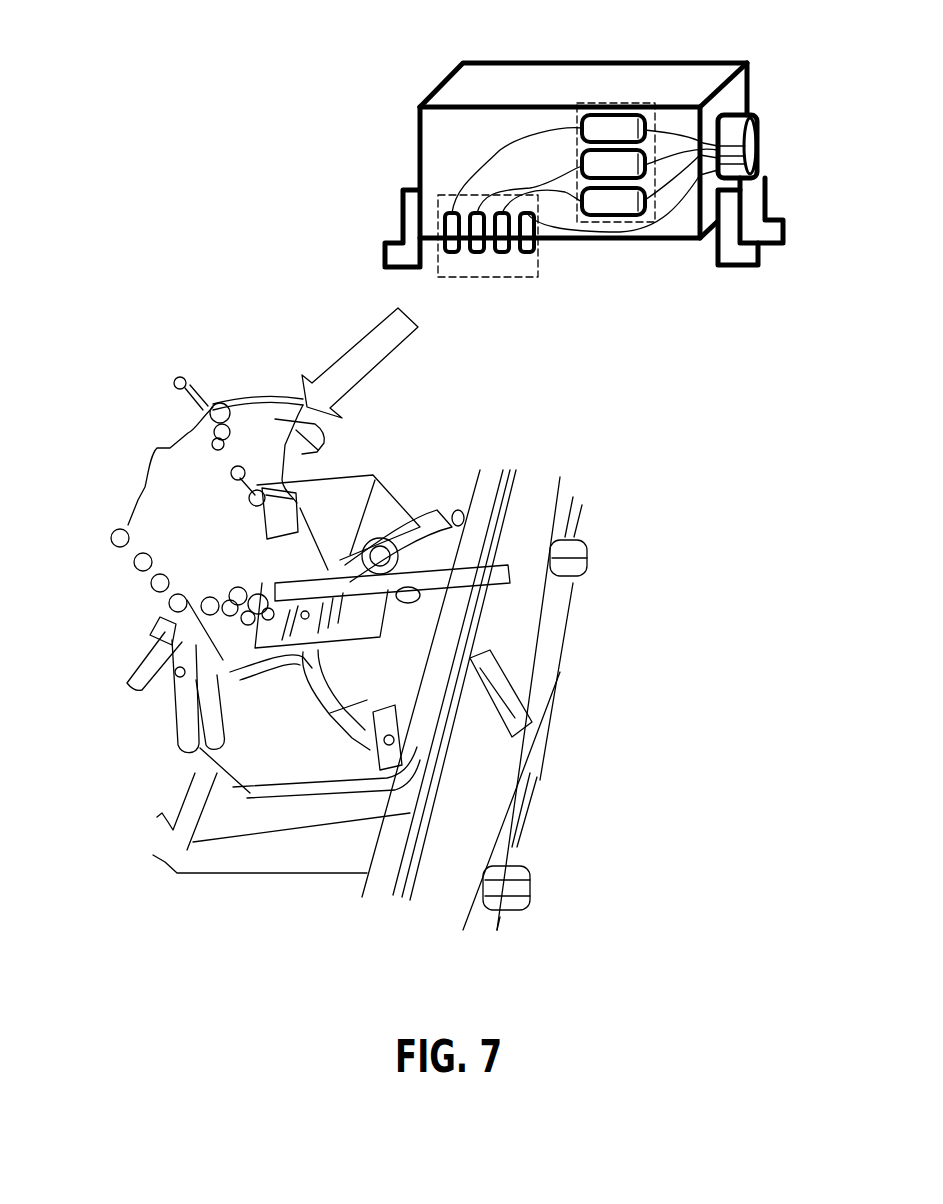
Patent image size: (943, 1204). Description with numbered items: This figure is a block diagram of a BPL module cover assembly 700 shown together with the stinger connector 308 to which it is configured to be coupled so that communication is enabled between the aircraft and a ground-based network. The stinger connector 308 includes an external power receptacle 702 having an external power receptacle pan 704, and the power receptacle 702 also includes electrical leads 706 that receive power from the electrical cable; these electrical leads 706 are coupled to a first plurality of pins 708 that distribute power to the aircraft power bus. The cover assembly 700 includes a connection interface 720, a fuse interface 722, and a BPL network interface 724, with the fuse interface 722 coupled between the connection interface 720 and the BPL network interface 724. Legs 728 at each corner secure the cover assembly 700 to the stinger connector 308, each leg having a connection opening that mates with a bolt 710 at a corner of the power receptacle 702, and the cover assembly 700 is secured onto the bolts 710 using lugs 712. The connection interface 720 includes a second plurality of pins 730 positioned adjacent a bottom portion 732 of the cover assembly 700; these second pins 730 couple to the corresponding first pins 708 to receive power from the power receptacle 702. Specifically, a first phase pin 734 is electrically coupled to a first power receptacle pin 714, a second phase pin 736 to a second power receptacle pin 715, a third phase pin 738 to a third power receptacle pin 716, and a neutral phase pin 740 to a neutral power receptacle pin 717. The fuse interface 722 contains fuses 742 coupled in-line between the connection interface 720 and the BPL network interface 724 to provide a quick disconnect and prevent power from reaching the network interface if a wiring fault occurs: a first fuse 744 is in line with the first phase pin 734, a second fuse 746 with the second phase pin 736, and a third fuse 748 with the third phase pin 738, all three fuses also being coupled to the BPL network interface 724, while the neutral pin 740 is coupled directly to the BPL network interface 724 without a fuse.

The BPL module cover assembly 700 is at (712, 30).
The external power receptacle 702 is at (312, 653).
The external power receptacle pan 704 is at (386, 664).
The electrical leads 706 is at (162, 627).
The first plurality of pins 708 is at (208, 661).
The bolt 710 is at (352, 730).
The lugs 712 is at (113, 538).
The first power receptacle pin 714 is at (210, 607).
The second power receptacle pin 715 is at (230, 607).
The third power receptacle pin 716 is at (238, 597).
The neutral power receptacle pin 717 is at (259, 614).
The connection interface 720 is at (438, 195).
The fuse interface 722 is at (582, 103).
The BPL network interface 724 is at (737, 143).
The legs 728 is at (385, 258).
The second plurality of pins 730 is at (488, 199).
The bottom portion 732 is at (578, 258).
The first phase pin 734 is at (452, 252).
The second phase pin 736 is at (477, 252).
The third phase pin 738 is at (502, 252).
The neutral phase pin 740 is at (527, 252).
The fuses 742 is at (548, 145).
The first fuse 744 is at (607, 115).
The second fuse 746 is at (626, 147).
The third fuse 748 is at (618, 217).
The stinger connector 308 is at (143, 708).